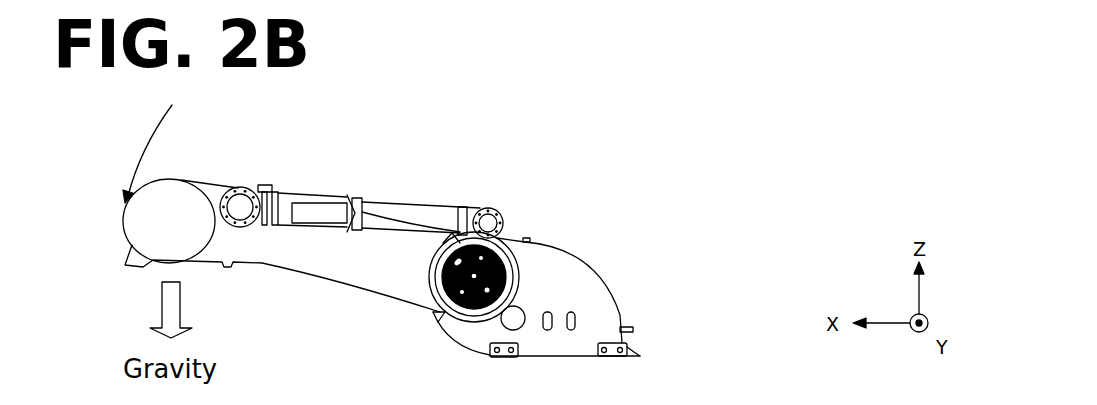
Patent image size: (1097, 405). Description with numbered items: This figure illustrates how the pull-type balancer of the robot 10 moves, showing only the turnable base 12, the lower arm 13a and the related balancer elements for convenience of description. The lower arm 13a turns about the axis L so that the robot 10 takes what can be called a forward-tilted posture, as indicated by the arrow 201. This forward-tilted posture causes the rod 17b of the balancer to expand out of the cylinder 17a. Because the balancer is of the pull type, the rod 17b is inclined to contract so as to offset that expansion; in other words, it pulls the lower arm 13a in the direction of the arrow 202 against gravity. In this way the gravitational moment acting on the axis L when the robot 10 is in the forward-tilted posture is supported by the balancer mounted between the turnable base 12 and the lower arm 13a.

The arrow 201 is at (147, 155).
The cylinder 17a is at (302, 193).
The arrow 202 is at (328, 208).
The rod 17b is at (407, 201).
The robot 10 is at (622, 150).
The axis L is at (476, 274).
The turnable base 12 is at (582, 290).
The lower arm 13a is at (315, 260).